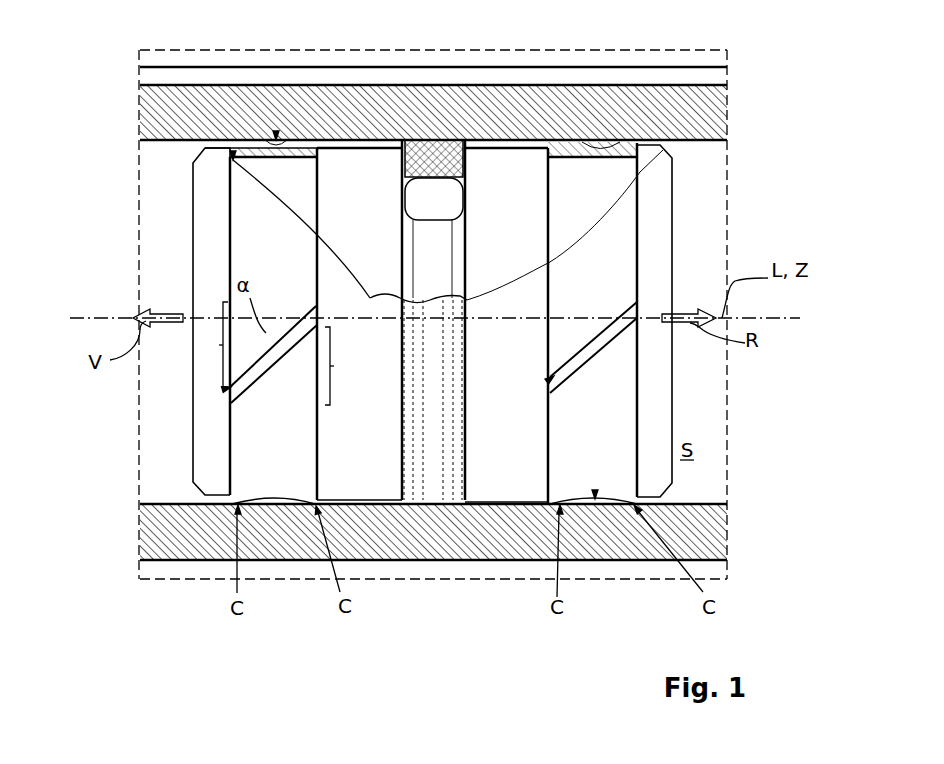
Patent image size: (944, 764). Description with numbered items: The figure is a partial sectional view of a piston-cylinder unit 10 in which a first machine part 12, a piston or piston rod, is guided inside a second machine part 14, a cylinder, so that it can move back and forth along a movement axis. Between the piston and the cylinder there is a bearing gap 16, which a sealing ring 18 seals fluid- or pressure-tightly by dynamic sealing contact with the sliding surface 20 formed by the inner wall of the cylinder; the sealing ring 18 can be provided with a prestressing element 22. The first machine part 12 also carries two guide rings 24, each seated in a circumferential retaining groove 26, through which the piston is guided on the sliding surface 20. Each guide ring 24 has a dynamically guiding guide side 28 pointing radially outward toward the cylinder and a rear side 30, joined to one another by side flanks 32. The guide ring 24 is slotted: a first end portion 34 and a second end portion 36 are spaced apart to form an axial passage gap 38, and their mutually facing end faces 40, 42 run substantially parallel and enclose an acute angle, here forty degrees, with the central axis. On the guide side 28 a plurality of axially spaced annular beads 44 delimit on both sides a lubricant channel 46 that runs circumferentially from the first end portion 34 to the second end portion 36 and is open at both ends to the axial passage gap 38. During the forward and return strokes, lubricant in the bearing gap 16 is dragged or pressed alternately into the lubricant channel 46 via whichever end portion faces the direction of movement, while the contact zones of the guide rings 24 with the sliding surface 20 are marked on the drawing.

The piston-cylinder unit 10 is at (757, 93).
The first machine part 12 is at (340, 475).
The second machine part 14 is at (533, 113).
The bearing gap 16 is at (505, 500).
The sealing ring 18 is at (420, 157).
The sliding surface 20 is at (688, 503).
The prestressing element 22 is at (438, 197).
The guide ring 24 is at (245, 200).
The circumferential retaining groove 26 is at (230, 161).
The guide side 28 is at (606, 138).
The rear side 30 is at (270, 157).
The side flanks 32 is at (230, 462).
The first end portion 34 is at (205, 344).
The second end portion 36 is at (345, 366).
The axial passage gap 38 is at (228, 388).
The end face 40 is at (292, 335).
The end face 42 is at (275, 360).
The annular beads 44 is at (233, 152).
The lubricant channel 46 is at (277, 133).